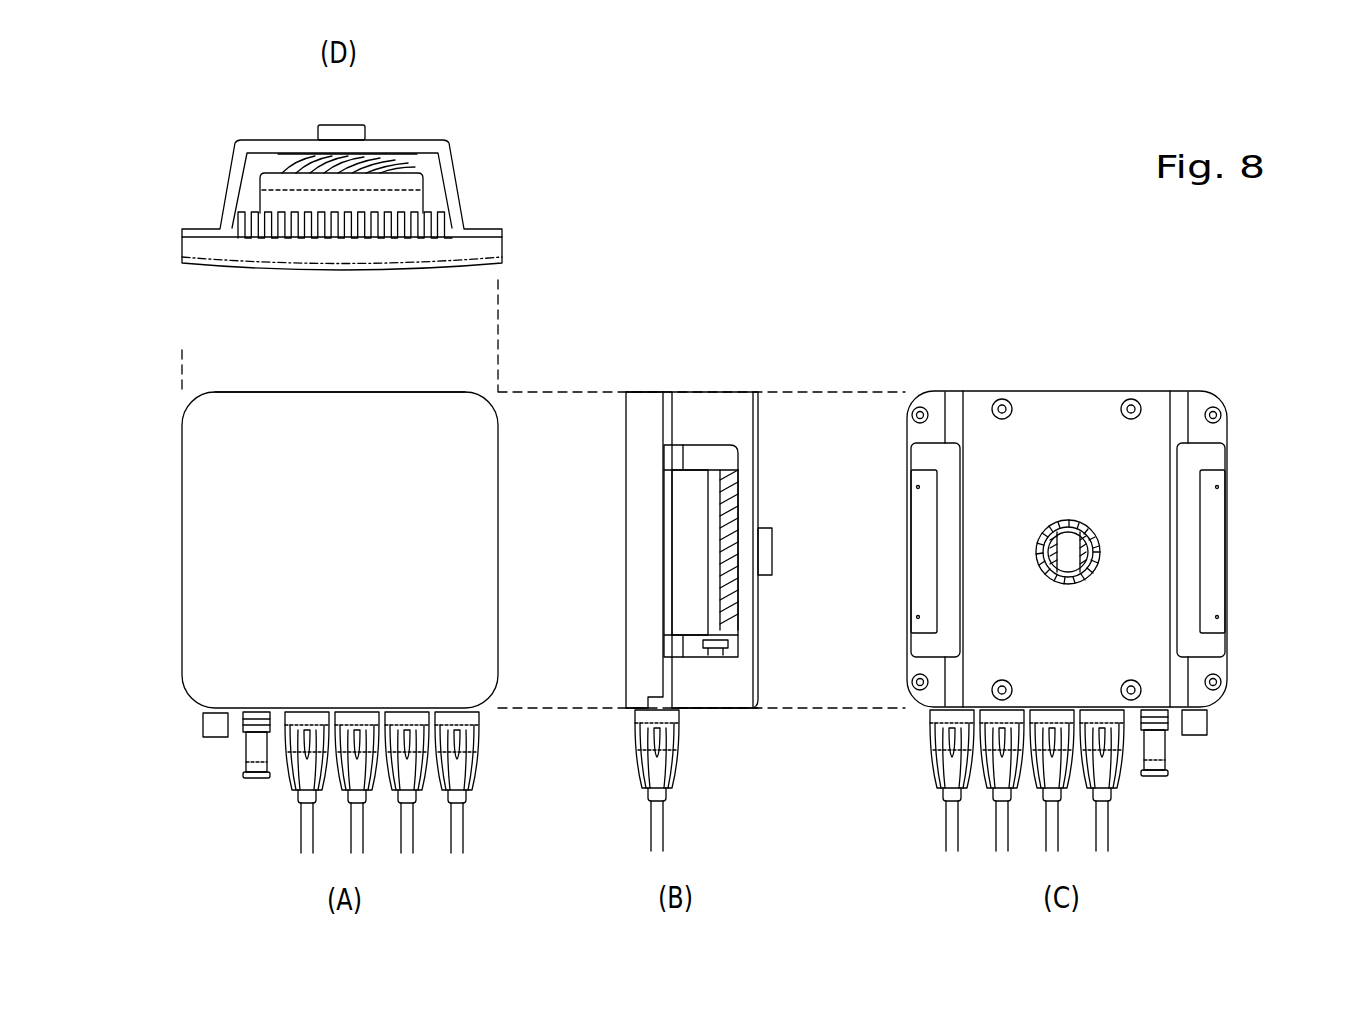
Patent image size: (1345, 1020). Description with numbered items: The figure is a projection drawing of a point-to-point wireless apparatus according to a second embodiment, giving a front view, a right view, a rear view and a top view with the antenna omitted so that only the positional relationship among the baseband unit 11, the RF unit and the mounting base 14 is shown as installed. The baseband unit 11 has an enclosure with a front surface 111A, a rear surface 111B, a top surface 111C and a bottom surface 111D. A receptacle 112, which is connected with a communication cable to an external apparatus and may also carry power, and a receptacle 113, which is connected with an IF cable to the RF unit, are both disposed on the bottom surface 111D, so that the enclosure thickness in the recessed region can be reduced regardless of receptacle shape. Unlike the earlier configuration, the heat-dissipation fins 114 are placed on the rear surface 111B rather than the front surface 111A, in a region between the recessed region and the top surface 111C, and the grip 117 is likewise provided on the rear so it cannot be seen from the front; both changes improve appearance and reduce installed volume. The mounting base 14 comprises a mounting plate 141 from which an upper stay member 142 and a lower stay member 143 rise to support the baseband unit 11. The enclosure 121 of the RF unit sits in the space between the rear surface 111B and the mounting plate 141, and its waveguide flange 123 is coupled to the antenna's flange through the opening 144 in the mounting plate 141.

The baseband unit 11 is at (168, 444).
The mounting base 14 is at (720, 392).
The front surface 111A is at (280, 272).
The rear surface 111B is at (1225, 446).
The top surface 111C is at (412, 392).
The bottom surface 111D is at (633, 712).
The receptacle 112 is at (480, 713).
The receptacle 113 is at (214, 740).
The heat-dissipation fins 114 is at (433, 218).
The grip 117 is at (912, 545).
The enclosure of the RF unit 121 is at (260, 193).
The waveguide flange 123 is at (345, 125).
The mounting plate 141 is at (757, 660).
The upper stay member 142 is at (458, 180).
The lower stay member 143 is at (740, 712).
The opening 144 is at (1084, 505).